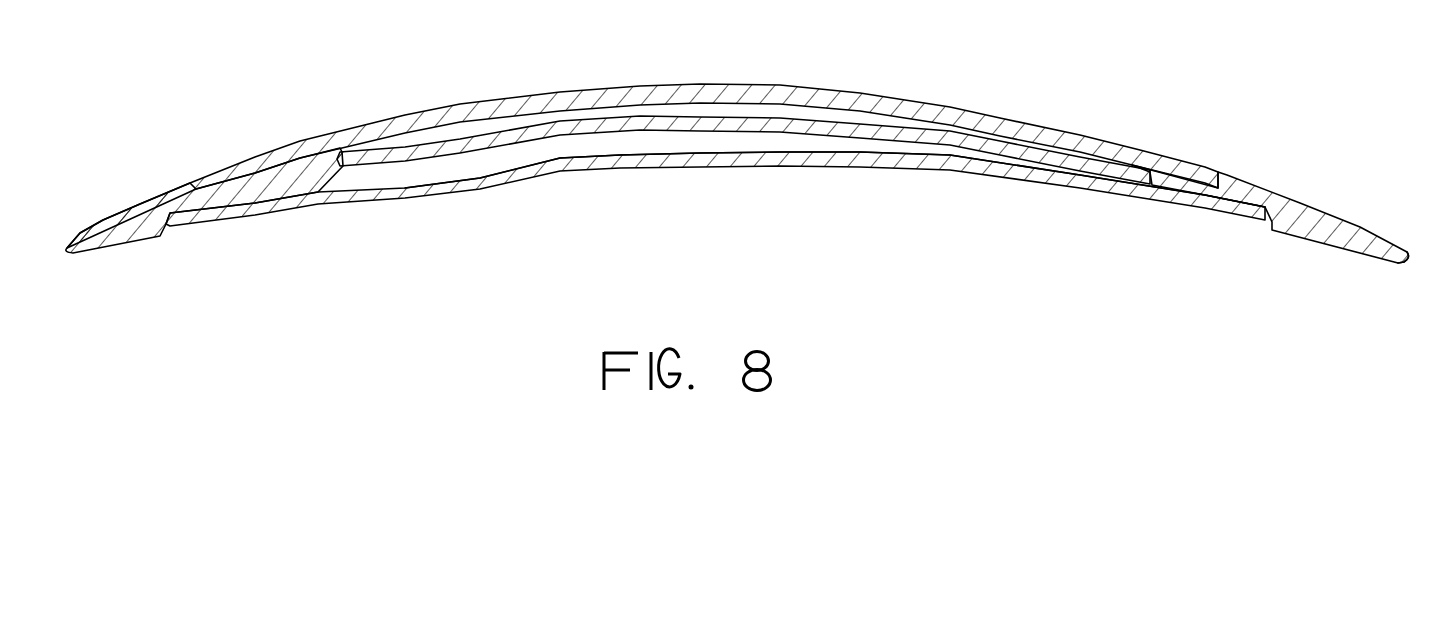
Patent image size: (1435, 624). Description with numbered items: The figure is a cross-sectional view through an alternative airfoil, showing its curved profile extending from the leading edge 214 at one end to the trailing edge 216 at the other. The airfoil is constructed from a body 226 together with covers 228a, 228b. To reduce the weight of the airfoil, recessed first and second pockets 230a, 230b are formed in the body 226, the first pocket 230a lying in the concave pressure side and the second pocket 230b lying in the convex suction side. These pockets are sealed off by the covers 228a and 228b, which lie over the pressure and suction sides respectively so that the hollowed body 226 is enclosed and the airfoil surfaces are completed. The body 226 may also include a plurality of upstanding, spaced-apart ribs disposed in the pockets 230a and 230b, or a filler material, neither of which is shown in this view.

The leading edge 214 is at (65, 252).
The trailing edge 216 is at (1404, 258).
The body 226 is at (1298, 210).
The first cover 228a is at (945, 165).
The second cover 228b is at (940, 112).
The first pocket 230a is at (527, 173).
The second pocket 230b is at (650, 90).